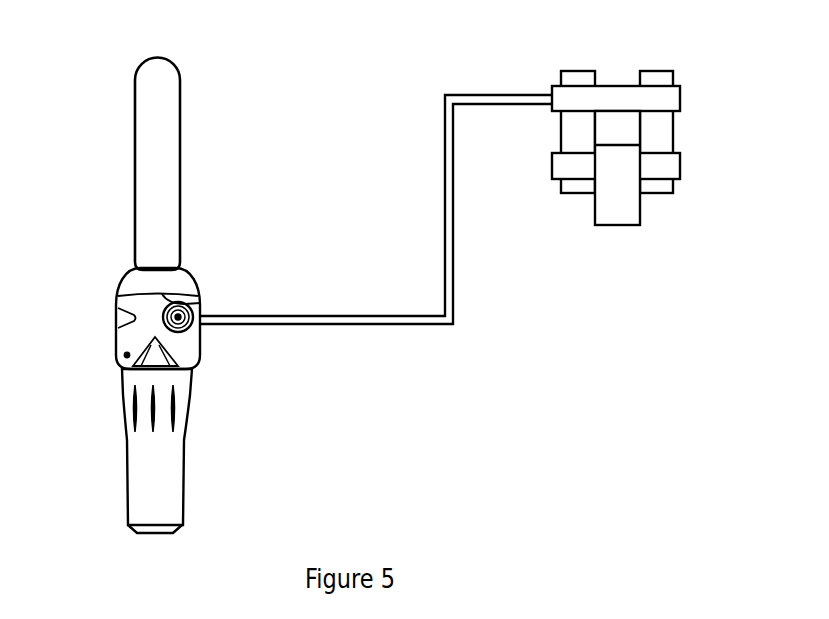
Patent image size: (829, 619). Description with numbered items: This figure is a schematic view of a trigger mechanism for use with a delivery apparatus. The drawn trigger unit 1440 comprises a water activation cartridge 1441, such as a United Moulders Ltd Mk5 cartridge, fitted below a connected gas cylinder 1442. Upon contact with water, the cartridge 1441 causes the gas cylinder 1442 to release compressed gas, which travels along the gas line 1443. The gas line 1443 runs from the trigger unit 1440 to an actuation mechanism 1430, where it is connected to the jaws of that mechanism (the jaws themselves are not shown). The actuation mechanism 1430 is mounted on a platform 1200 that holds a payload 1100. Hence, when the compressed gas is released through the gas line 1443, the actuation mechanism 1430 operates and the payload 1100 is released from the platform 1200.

The handheld controller 1440 is at (86, 80).
The gas cylinder 1442 is at (162, 165).
The water activation cartridge 1441 is at (167, 470).
The gas line 1443 is at (418, 320).
The actuation mechanism 1430 is at (535, 75).
The platform 1200 is at (544, 197).
The payload 1100 is at (625, 250).